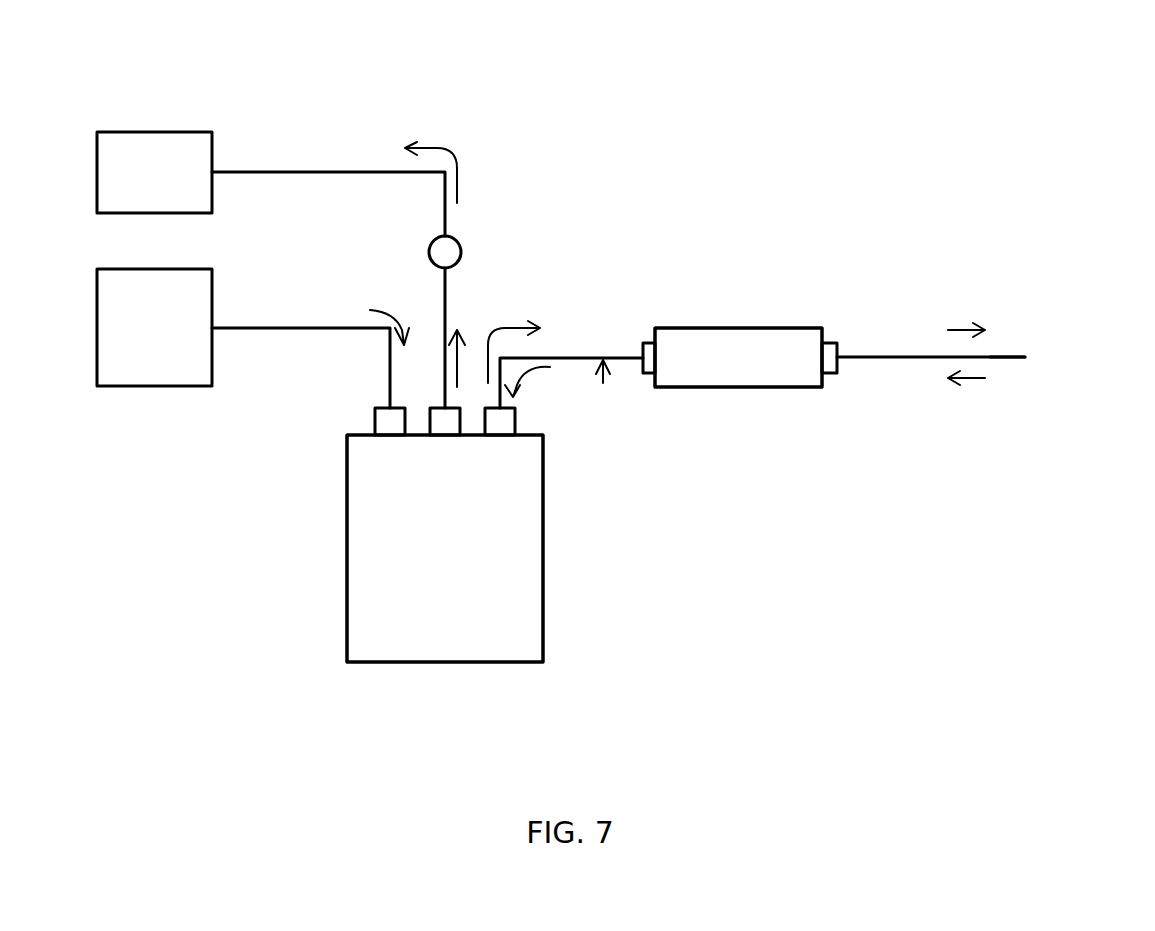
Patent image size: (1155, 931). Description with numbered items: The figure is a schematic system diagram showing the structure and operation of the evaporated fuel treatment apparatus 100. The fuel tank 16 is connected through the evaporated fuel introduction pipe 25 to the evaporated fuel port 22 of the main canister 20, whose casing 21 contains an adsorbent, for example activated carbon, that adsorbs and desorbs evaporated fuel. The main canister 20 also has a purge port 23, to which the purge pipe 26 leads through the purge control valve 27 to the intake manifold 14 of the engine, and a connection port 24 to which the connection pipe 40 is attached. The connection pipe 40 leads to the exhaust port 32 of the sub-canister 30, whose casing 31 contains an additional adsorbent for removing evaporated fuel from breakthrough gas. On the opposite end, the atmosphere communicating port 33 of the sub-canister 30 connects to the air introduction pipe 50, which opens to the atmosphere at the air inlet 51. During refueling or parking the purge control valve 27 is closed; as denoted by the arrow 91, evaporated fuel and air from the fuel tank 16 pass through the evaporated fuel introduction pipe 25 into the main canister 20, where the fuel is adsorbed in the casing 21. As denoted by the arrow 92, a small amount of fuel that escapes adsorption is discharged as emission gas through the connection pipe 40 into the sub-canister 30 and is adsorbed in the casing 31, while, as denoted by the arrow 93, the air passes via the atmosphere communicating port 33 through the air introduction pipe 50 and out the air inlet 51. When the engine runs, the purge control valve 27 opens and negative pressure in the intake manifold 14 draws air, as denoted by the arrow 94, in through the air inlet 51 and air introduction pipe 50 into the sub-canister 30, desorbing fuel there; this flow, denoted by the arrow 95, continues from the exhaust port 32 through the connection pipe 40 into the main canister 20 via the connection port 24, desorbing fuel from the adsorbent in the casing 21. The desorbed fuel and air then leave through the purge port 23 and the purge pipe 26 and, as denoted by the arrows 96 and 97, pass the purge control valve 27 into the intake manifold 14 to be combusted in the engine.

The evaporated fuel treatment apparatus 100 is at (1088, 130).
The intake manifold 14 is at (155, 132).
The fuel tank 16 is at (130, 387).
The main canister 20 is at (386, 663).
The casing 21 is at (347, 599).
The evaporated fuel port 22 is at (373, 421).
The purge port 23 is at (461, 407).
The connection port 24 is at (515, 423).
The evaporated fuel introduction pipe 25 is at (267, 328).
The purge pipe 26 is at (446, 297).
The purge control valve 27 is at (460, 240).
The sub-canister 30 is at (740, 308).
The casing 31 is at (752, 388).
The exhaust port 32 is at (522, 327).
The atmosphere communicating port 33 is at (838, 347).
The connection pipe 40 is at (603, 368).
The air introduction pipe 50 is at (885, 358).
The air inlet 51 is at (1010, 357).
The arrow 91 is at (393, 311).
The arrow 92 is at (650, 342).
The arrow 93 is at (962, 325).
The arrow 94 is at (972, 385).
The arrow 95 is at (523, 375).
The arrow 96 is at (462, 407).
The arrow 97 is at (440, 143).